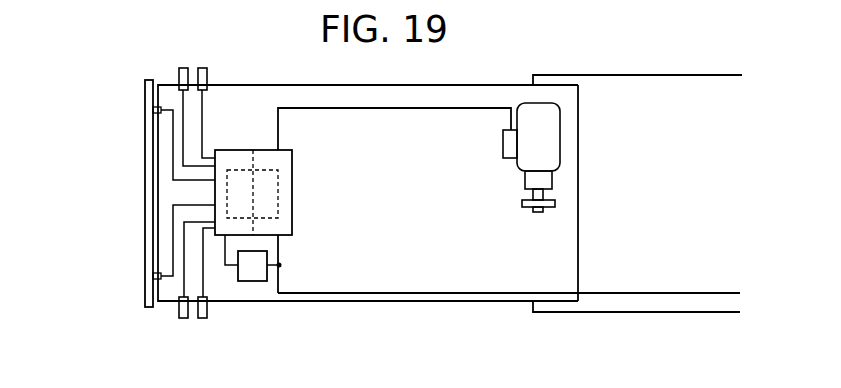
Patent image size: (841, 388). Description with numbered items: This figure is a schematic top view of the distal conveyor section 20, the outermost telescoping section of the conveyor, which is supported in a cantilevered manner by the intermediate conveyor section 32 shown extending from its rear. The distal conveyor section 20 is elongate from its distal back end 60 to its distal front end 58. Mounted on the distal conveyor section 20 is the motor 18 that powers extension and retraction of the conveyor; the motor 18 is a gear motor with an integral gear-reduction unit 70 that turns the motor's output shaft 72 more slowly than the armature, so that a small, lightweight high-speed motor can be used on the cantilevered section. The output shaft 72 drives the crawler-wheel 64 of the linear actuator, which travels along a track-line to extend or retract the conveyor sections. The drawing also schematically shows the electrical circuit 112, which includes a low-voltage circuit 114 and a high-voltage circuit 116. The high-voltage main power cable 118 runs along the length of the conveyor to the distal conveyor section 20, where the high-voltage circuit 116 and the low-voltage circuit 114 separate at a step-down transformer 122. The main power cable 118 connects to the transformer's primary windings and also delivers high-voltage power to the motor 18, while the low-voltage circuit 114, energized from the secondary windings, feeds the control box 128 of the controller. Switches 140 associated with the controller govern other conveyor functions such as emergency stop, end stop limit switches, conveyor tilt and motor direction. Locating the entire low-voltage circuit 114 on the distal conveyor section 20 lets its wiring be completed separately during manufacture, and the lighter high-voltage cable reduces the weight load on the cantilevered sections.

The motor 18 is at (518, 163).
The distal conveyor section 20 is at (383, 301).
The intermediate conveyor section 32 is at (635, 312).
The distal front end 58 is at (158, 226).
The distal back end 60 is at (579, 240).
The crawler-wheel 64 is at (527, 208).
The gear-reduction unit 70 is at (525, 185).
The output shaft 72 is at (537, 213).
The electrical circuit 112 is at (279, 189).
The low-voltage circuit 114 is at (203, 118).
The high-voltage circuit 116 is at (411, 110).
The main power cable 118 is at (406, 293).
The step-down transformer 122 is at (254, 282).
The control box 128 is at (293, 210).
The switches 140 is at (181, 68).